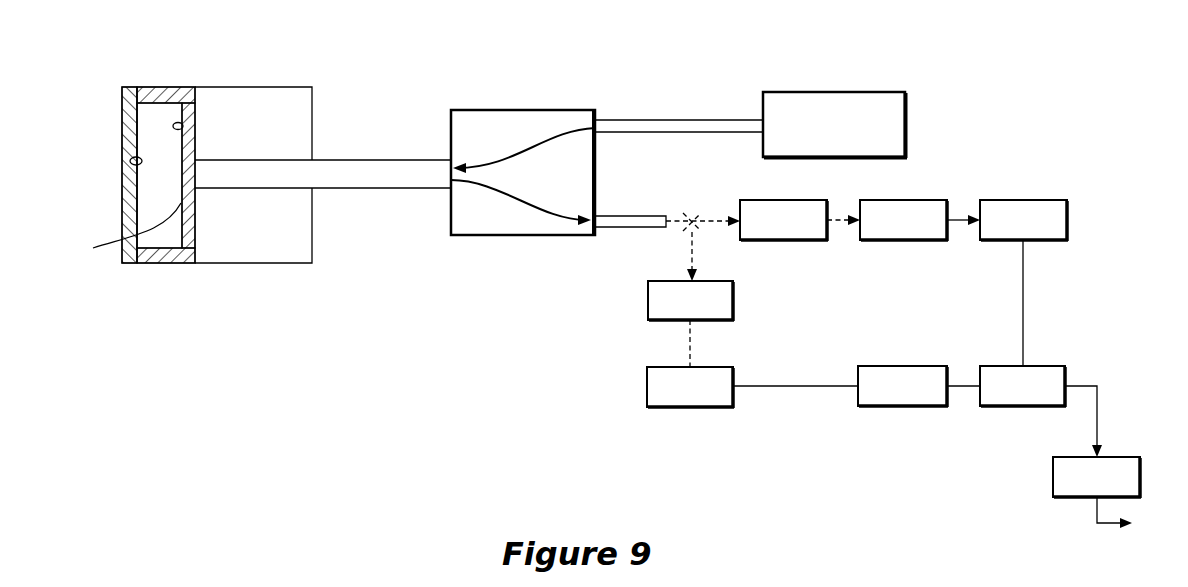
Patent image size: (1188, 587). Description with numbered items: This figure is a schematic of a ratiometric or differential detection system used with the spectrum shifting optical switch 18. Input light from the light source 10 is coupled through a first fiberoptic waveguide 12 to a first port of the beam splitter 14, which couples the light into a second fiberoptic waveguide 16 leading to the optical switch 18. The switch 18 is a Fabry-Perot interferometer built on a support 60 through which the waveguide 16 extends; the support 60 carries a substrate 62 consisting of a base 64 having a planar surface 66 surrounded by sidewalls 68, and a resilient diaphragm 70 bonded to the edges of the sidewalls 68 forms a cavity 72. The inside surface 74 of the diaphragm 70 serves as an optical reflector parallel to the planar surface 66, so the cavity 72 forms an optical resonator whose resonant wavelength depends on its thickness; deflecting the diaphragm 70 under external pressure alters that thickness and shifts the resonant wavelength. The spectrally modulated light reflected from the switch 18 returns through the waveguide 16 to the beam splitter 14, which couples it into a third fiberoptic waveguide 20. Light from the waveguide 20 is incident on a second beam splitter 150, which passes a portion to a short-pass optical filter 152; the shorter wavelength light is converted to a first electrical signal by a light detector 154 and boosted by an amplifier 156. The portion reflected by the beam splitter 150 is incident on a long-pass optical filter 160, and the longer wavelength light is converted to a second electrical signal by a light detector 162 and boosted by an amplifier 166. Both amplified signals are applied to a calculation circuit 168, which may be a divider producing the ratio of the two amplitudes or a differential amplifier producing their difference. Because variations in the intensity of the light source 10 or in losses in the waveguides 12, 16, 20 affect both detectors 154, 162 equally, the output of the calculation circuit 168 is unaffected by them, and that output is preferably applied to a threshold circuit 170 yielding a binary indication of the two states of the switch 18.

The light source 10 is at (835, 92).
The first fiberoptic waveguide 12 is at (690, 120).
The beam splitter 14 is at (523, 111).
The second fiberoptic waveguide 16 is at (380, 163).
The optical switch 18 is at (308, 66).
The third fiberoptic waveguide 20 is at (618, 215).
The support 60 is at (248, 258).
The substrate 62 is at (173, 263).
The base 64 is at (182, 126).
The planar surface 66 is at (129, 237).
The sidewalls 68 is at (158, 88).
The resilient diaphragm 70 is at (122, 128).
The cavity 72 is at (176, 170).
The inside surface 74 is at (131, 158).
The second beam splitter 150 is at (685, 213).
The short-pass optical filter 152 is at (817, 240).
The light detector 154 is at (922, 200).
The amplifier 156 is at (1023, 200).
The long-pass optical filter 160 is at (648, 281).
The light detector 162 is at (647, 370).
The amplifier 166 is at (888, 365).
The calculation circuit 168 is at (1038, 365).
The output device 170 is at (1058, 457).